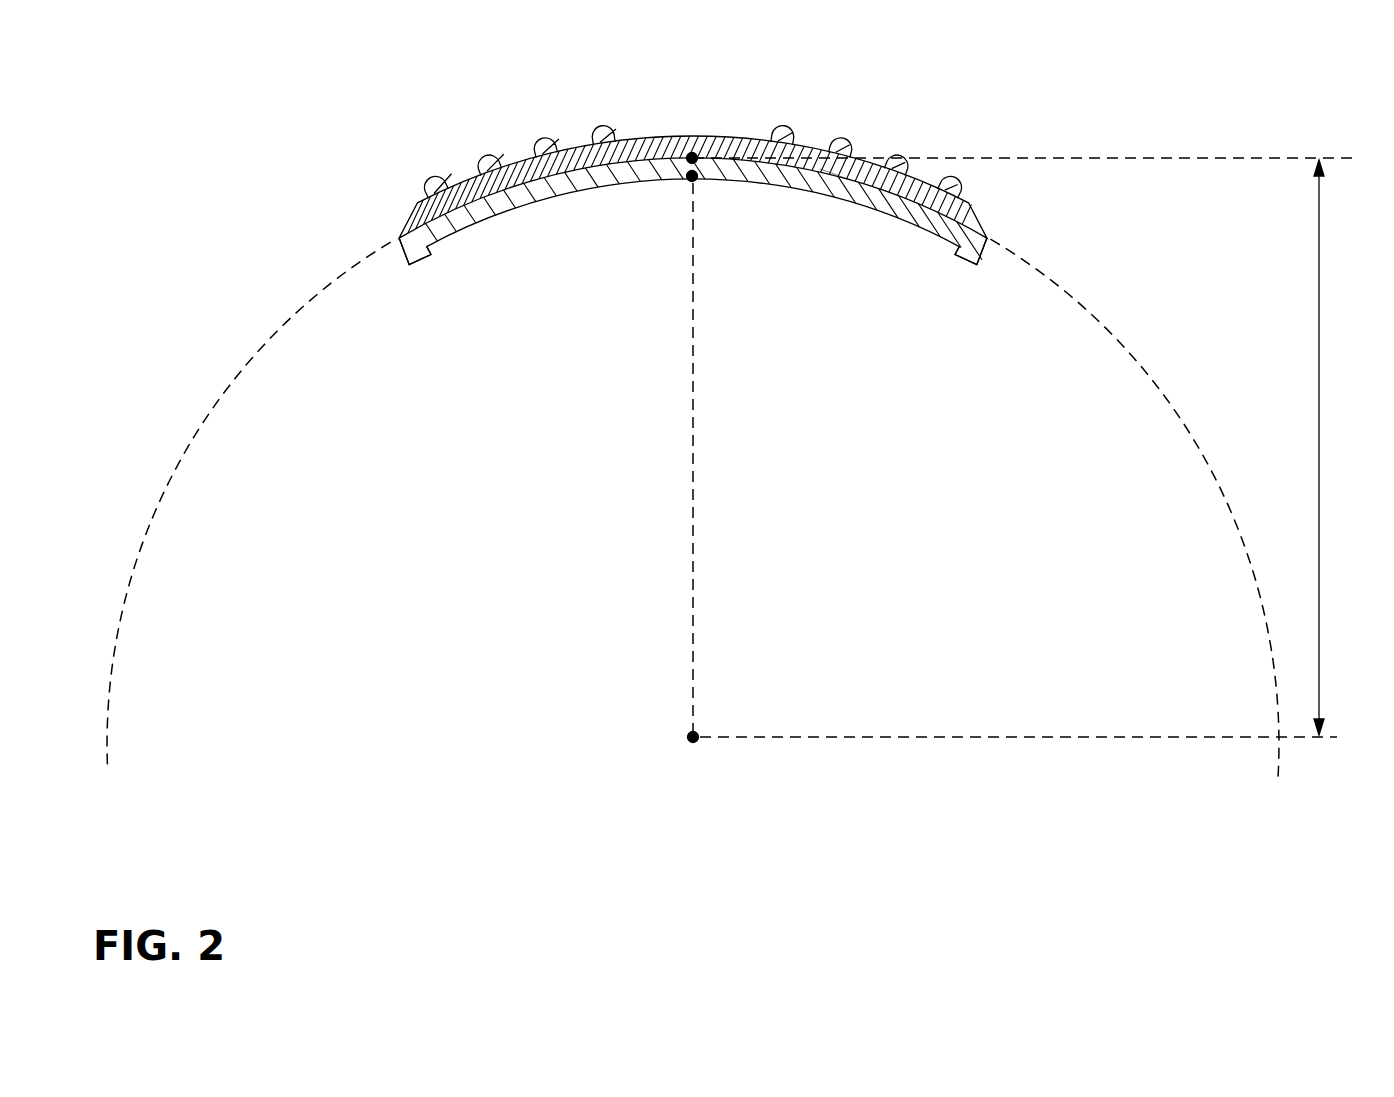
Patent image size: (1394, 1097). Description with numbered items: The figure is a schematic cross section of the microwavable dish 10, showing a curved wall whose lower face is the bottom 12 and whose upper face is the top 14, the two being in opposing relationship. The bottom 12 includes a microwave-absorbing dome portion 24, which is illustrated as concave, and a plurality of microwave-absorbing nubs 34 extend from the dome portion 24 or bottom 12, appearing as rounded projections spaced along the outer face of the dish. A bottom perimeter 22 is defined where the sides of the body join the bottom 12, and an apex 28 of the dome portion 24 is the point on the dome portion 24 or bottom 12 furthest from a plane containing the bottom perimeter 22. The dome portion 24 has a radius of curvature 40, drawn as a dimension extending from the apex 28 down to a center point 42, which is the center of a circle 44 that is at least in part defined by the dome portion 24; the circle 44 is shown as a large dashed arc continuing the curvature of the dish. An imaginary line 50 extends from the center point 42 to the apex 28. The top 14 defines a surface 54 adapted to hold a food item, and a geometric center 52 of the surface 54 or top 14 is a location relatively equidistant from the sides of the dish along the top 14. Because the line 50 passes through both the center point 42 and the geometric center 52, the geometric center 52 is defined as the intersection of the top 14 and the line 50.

The microwavable dish 10 is at (392, 183).
The bottom 12 is at (629, 148).
The top 14 is at (475, 225).
The bottom perimeter 22 is at (397, 238).
The dome portion 24 is at (848, 180).
The apex 28 is at (695, 155).
The microwave-absorbing nubs 34 is at (540, 150).
The radius of curvature 40 is at (1318, 442).
The center point 42 is at (687, 739).
The circle 44 is at (237, 375).
The imaginary line 50 is at (693, 383).
The geometric center 52 is at (689, 180).
The surface 54 is at (833, 192).